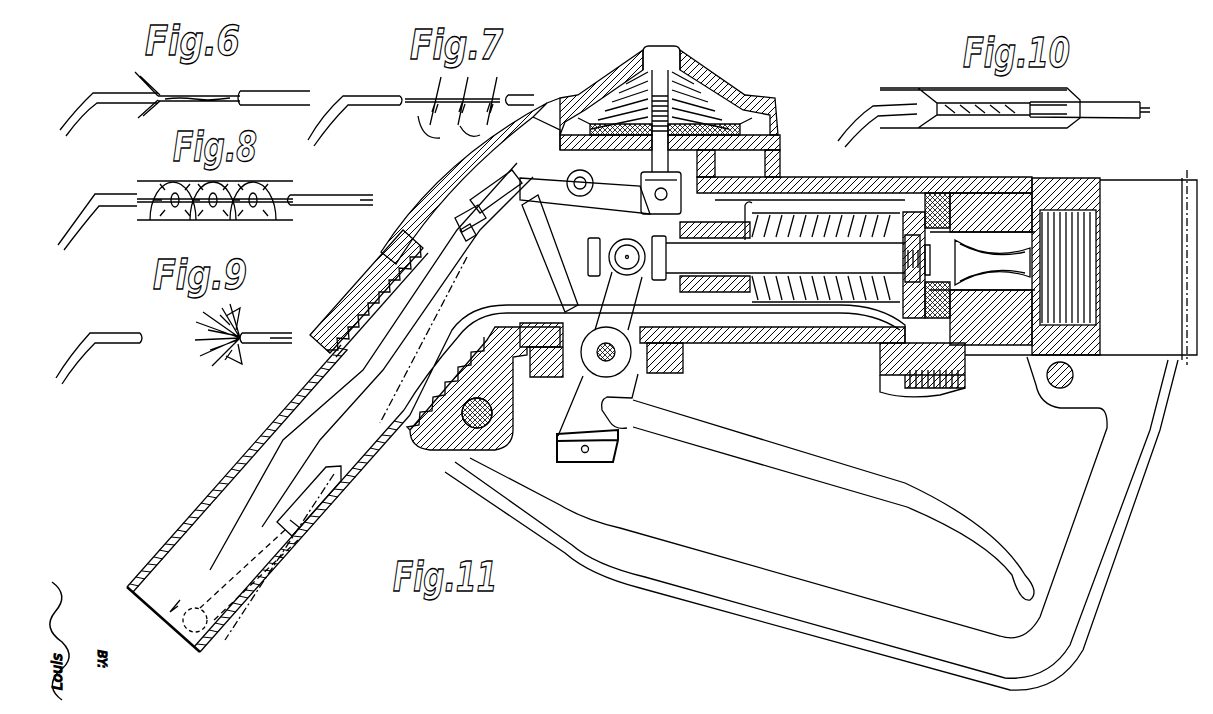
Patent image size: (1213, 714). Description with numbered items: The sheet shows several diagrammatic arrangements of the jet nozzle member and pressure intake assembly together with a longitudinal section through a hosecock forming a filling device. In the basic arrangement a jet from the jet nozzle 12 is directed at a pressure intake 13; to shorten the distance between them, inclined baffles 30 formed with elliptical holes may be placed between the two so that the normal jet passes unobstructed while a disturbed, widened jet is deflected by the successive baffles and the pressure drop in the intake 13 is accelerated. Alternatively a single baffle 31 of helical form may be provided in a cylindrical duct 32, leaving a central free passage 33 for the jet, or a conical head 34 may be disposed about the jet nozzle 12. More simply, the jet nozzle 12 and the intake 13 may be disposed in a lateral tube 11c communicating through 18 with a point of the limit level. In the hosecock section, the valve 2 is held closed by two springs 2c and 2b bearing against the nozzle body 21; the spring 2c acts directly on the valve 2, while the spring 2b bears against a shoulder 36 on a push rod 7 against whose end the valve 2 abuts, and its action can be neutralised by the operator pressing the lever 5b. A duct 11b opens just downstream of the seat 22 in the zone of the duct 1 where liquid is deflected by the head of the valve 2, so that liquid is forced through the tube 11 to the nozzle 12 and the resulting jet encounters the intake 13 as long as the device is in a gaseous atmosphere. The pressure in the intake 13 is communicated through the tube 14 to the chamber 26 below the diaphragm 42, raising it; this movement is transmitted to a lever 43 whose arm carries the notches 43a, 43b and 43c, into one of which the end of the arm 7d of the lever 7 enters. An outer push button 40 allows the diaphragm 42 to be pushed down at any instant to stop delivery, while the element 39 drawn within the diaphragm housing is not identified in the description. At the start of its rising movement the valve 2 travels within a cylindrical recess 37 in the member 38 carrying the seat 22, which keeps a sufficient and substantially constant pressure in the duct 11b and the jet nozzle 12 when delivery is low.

In FIG. 11, the duct 1 is at (196, 530).
In FIG. 11, the valve 2 is at (914, 212).
In FIG. 11, the spring 2b is at (782, 282).
In FIG. 11, the spring 2c is at (800, 210).
In FIG. 11, the lever 5b is at (826, 485).
In FIG. 11, the push rod 7 is at (636, 303).
In FIG. 11, the arm 7d is at (553, 255).
In FIG. 11, the tube 11 is at (380, 428).
In FIG. 11, the duct 11b is at (938, 358).
In FIG. 10, the lateral tube 11c is at (948, 88).
In FIG. 11, the lateral tube 11c is at (177, 606).
In FIG. 6, the jet nozzle 12 is at (272, 93).
In FIG. 8, the jet nozzle 12 is at (333, 197).
In FIG. 9, the jet nozzle 12 is at (273, 343).
In FIG. 7, the jet nozzle 12 is at (518, 95).
In FIG. 10, the jet nozzle 12 is at (1140, 112).
In FIG. 11, the jet nozzle 12 is at (330, 505).
In FIG. 6, the pressure intake 13 is at (114, 102).
In FIG. 8, the pressure intake 13 is at (103, 215).
In FIG. 9, the pressure intake 13 is at (113, 342).
In FIG. 7, the pressure intake 13 is at (366, 102).
In FIG. 10, the pressure intake 13 is at (860, 108).
In FIG. 11, the pressure intake 13 is at (232, 624).
In FIG. 11, the tube 14 is at (310, 412).
In FIG. 10, the duct 18 is at (1030, 127).
In FIG. 11, the duct 18 is at (298, 535).
In FIG. 11, the nozzle body 21 is at (985, 192).
In FIG. 11, the seat 22 is at (955, 195).
In FIG. 11, the chamber 26 is at (576, 120).
In FIG. 7, the inclined baffles 30 is at (447, 120).
In FIG. 8, the helical baffle 31 is at (160, 218).
In FIG. 8, the cylindrical duct 32 is at (205, 222).
In FIG. 8, the central free passage 33 is at (254, 208).
In FIG. 9, the conical head 34 is at (238, 348).
In FIG. 11, the shoulder 36 is at (858, 318).
In FIG. 11, the cylindrical recess 37 is at (932, 212).
In FIG. 11, the member 38 is at (1012, 192).
In FIG. 11, the conical spring 39 is at (612, 100).
In FIG. 11, the outer push button 40 is at (677, 62).
In FIG. 11, the diaphragm 42 is at (736, 108).
In FIG. 11, the lever 43 is at (535, 185).
In FIG. 11, the notch 43a is at (490, 192).
In FIG. 11, the notch 43b is at (470, 212).
In FIG. 11, the notch 43c is at (462, 233).